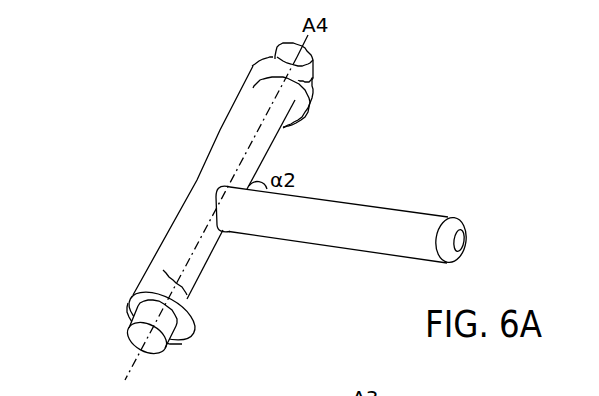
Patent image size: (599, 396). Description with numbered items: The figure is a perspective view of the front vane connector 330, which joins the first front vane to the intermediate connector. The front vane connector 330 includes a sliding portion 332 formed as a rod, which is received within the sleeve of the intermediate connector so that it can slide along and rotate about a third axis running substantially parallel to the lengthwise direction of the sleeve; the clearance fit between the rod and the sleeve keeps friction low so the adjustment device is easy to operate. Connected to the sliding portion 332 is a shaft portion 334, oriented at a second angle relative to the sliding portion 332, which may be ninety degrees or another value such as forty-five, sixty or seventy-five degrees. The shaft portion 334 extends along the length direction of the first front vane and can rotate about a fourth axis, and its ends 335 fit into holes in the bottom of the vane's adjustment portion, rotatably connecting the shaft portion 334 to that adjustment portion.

The front vane connector 330 is at (148, 84).
The sliding portion 332 is at (430, 227).
The shaft portion 334 is at (172, 235).
The ends of the shaft portion 335 is at (310, 62).